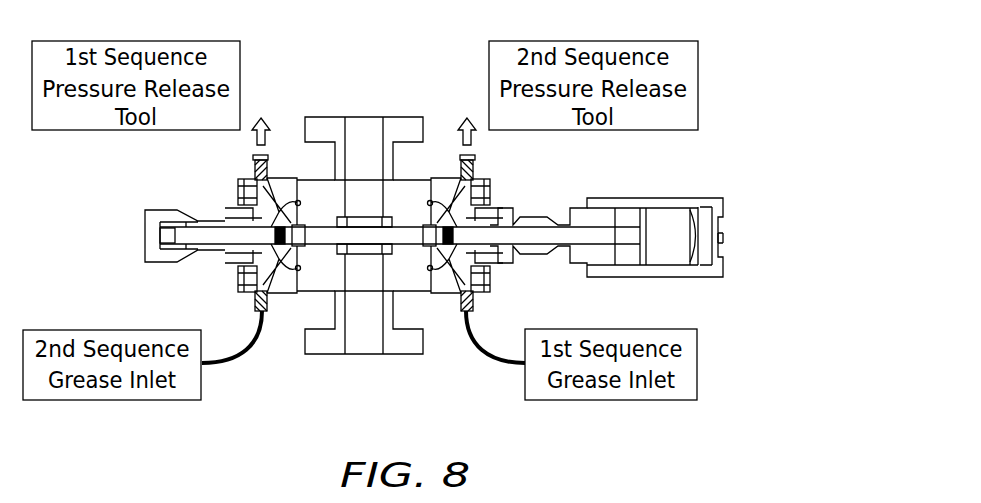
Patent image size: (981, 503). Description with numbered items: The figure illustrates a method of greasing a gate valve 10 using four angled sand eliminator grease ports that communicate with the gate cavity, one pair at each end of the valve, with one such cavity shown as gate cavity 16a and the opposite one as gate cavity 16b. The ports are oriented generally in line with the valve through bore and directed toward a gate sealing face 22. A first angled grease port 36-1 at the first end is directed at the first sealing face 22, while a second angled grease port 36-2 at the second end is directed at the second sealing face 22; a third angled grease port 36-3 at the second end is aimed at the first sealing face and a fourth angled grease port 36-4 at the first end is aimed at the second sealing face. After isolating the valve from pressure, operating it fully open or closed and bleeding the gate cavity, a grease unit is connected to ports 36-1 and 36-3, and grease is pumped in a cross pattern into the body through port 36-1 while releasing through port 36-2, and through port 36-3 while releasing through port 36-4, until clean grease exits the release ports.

The gate valve 10 is at (729, 143).
The gate cavity 16a is at (490, 204).
The second check valve assembly 16b is at (238, 204).
The gate sealing face 22 is at (300, 220).
The first angled grease port 36-1 is at (494, 327).
The second angled grease port 36-2 is at (236, 149).
The third angled grease port 36-3 is at (234, 327).
The fourth angled grease port 36-4 is at (493, 149).